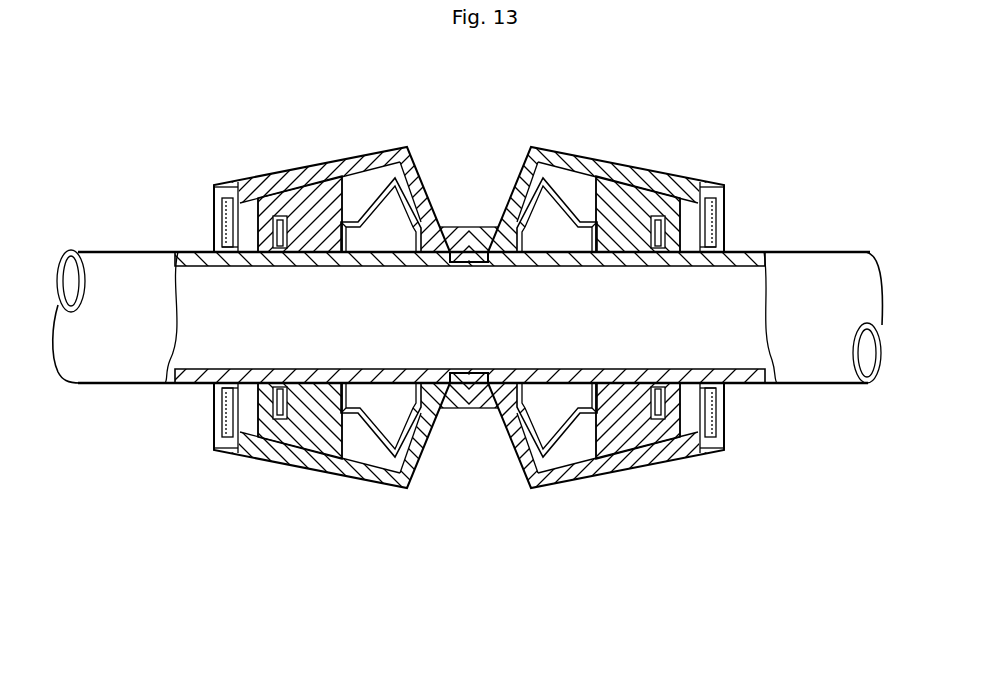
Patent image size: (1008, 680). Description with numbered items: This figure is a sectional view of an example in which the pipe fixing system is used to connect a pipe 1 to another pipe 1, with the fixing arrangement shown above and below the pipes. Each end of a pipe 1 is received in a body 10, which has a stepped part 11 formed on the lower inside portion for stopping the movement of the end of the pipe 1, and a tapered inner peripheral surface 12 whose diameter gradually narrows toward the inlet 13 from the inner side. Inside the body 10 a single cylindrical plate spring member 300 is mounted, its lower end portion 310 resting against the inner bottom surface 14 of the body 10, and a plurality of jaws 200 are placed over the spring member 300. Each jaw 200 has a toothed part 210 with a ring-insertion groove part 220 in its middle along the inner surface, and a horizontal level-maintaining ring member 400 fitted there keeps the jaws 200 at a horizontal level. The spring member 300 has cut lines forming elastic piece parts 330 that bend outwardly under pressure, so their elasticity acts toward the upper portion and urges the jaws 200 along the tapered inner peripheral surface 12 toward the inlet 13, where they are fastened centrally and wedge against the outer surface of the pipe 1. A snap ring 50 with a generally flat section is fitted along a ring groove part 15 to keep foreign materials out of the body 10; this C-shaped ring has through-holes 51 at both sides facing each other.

The pipe 1 is at (823, 282).
The body 10 is at (366, 160).
The stepped part 11 is at (503, 227).
The tapered inner peripheral surface 12 is at (345, 185).
The inlet 13 is at (212, 242).
The inner bottom surface 14 is at (480, 227).
The ring groove part 15 is at (722, 204).
The snap ring 50 is at (227, 227).
The through-holes 51 is at (206, 228).
The jaws 200 is at (277, 190).
The toothed part 210 is at (306, 440).
The ring-insertion groove part 220 is at (282, 440).
The single cylindrical plate spring member 300 is at (528, 440).
The lower end portion 310 is at (528, 485).
The elastic piece part 330 is at (368, 445).
The horizontal level-maintaining ring member 400 is at (253, 430).